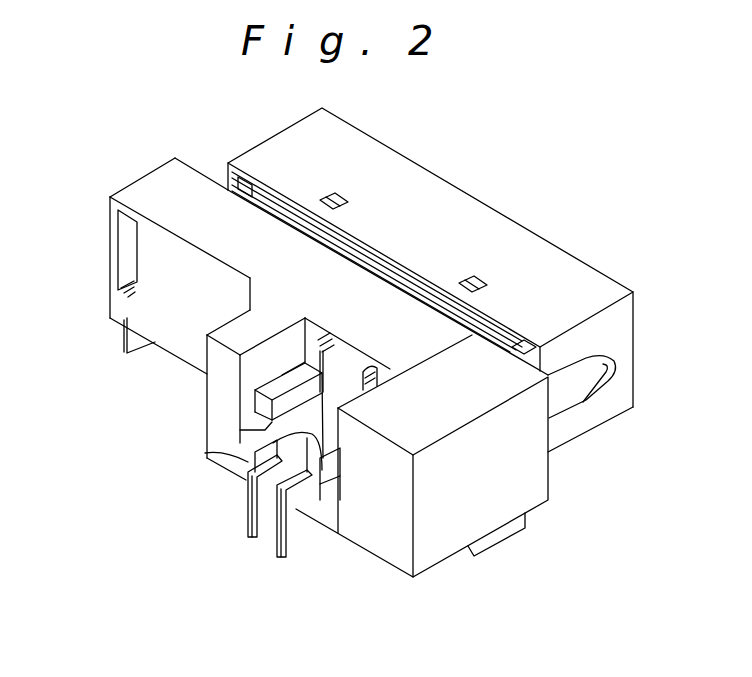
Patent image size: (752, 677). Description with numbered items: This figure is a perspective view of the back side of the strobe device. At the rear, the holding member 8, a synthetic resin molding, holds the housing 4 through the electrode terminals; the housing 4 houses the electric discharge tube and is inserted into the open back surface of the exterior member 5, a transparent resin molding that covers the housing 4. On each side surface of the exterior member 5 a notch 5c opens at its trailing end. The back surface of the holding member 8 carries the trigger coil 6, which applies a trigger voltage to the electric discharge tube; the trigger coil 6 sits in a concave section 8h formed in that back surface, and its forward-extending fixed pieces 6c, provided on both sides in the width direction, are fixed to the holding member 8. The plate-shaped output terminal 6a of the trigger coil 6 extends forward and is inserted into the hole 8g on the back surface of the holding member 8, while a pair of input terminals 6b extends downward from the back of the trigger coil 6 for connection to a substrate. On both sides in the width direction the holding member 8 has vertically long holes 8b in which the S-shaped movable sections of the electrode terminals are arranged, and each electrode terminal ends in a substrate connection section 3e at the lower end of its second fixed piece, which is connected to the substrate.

The substrate connection section 3e is at (138, 355).
The housing 4 is at (283, 207).
The exterior member 5 is at (430, 207).
The notches 5c is at (575, 410).
The trigger coil 6 is at (230, 460).
The output terminal 6a is at (338, 368).
The input terminals 6b is at (247, 524).
The fixed pieces 6c is at (247, 440).
The holding member 8 is at (180, 266).
The vertically long holes 8b is at (118, 237).
The hole 8g is at (389, 366).
The concave section 8h is at (276, 360).